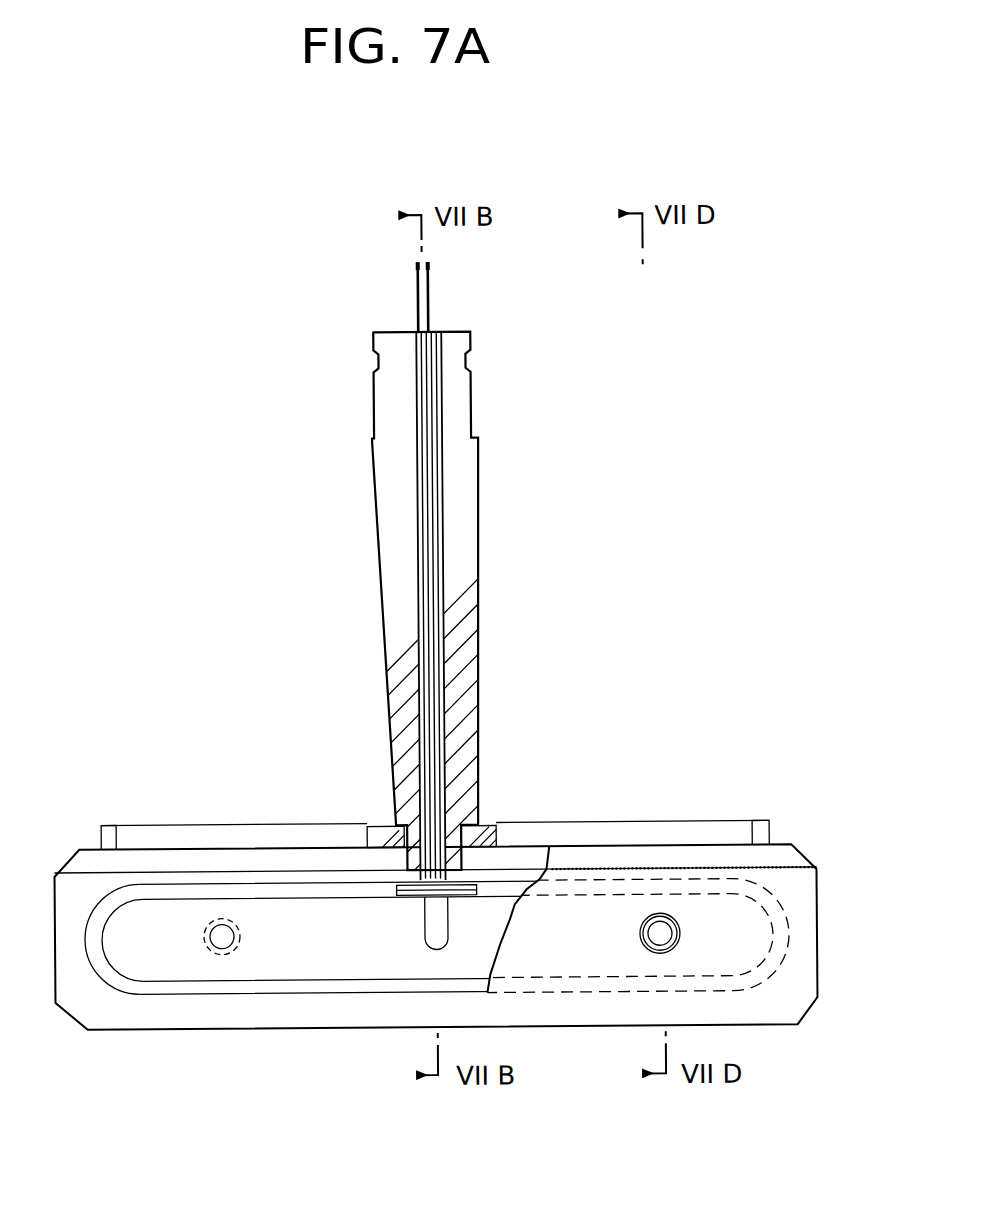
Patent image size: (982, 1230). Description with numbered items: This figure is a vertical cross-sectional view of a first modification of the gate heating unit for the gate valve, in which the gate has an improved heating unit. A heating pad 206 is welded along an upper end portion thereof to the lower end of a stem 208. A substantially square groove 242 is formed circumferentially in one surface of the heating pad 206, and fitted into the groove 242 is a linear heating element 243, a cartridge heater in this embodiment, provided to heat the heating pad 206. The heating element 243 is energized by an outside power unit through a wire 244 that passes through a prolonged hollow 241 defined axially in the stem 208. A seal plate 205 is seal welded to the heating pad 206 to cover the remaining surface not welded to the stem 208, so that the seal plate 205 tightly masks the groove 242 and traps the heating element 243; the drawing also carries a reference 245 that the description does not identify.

The seal plate 205 is at (800, 1022).
The heating pad 206 is at (173, 1015).
The stem 208 is at (465, 463).
The prolonged hollow 241 is at (437, 541).
The groove 242 is at (290, 995).
The linear heating element 243 is at (266, 893).
The wire 244 is at (437, 626).
The knurled edge 245 is at (728, 868).